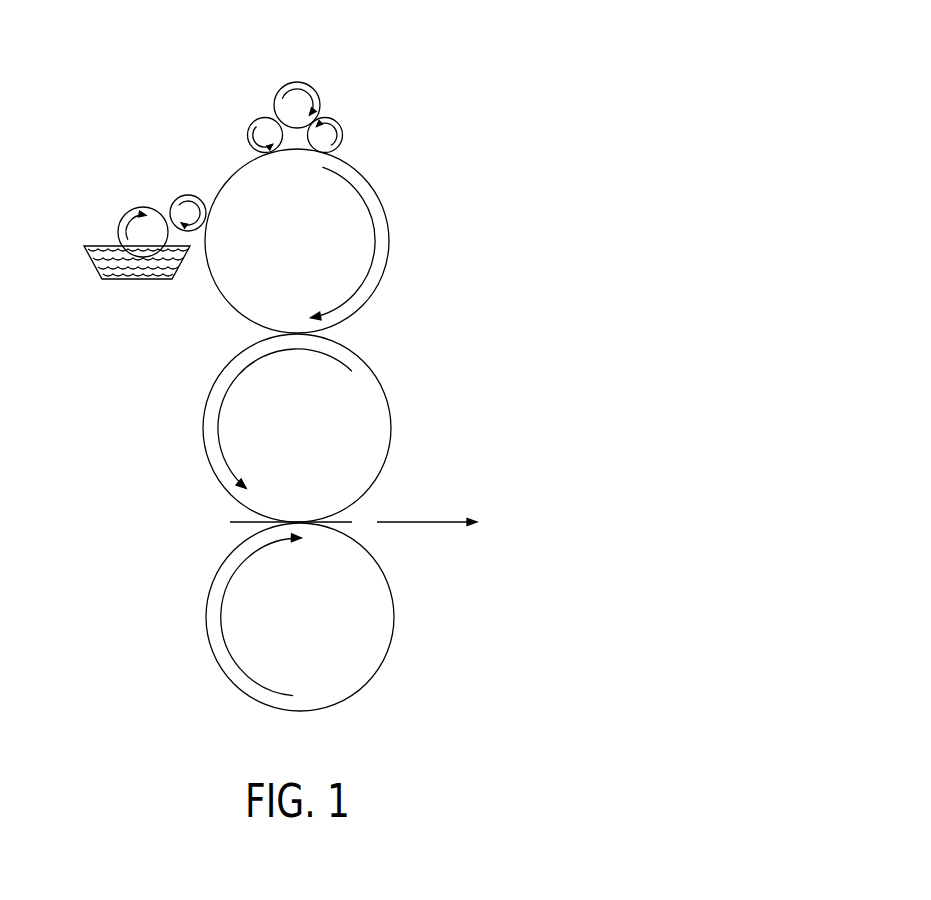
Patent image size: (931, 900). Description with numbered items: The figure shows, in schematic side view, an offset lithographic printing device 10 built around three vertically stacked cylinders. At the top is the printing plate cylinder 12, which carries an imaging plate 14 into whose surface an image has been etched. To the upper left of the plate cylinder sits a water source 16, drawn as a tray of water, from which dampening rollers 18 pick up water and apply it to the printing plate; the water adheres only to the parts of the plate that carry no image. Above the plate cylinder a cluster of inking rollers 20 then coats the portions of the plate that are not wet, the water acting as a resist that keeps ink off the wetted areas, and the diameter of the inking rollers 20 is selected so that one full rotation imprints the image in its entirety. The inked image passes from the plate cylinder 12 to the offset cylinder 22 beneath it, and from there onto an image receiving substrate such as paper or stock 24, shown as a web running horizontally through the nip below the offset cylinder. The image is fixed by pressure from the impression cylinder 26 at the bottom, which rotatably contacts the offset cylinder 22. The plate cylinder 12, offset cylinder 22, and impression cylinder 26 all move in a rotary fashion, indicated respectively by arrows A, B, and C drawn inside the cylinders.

The offset lithographic printing device 10 is at (525, 102).
The printing plate cylinder 12 is at (309, 254).
The imaging plate 14 is at (388, 242).
The water source 16 is at (93, 265).
The dampening rollers 18 is at (176, 200).
The inking rollers 20 is at (336, 121).
The offset cylinder 22 is at (308, 441).
The image receiving substrate 24 is at (210, 523).
The impression cylinder 26 is at (310, 630).
The arrow indicating rotary motion of plate cylinder A is at (370, 275).
The arrow indicating rotary motion of offset cylinder B is at (230, 382).
The arrow indicating rotary motion of impression cylinder C is at (222, 592).